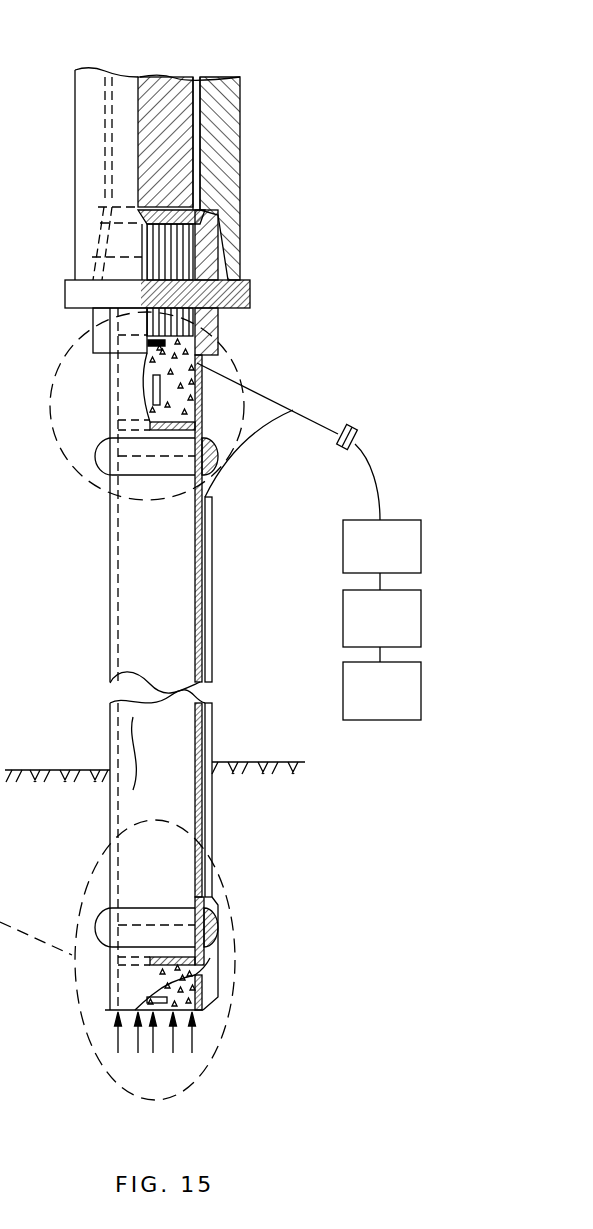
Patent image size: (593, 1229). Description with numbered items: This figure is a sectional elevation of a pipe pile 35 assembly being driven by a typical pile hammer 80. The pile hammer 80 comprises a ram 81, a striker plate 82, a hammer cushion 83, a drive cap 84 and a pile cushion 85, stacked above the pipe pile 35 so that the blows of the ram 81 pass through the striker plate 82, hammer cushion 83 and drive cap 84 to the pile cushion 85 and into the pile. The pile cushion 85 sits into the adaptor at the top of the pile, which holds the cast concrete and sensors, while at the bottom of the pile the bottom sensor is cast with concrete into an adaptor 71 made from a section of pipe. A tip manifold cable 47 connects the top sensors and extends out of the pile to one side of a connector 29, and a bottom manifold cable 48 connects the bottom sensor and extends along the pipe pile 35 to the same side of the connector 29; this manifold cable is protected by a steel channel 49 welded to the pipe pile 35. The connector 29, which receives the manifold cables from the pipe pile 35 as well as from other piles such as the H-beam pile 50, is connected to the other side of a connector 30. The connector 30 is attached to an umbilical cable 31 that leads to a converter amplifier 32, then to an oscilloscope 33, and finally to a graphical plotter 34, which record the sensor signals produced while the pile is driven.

The pile hammer 80 is at (240, 137).
The ram 81 is at (170, 77).
The striker plate 82 is at (208, 213).
The hammer cushion 83 is at (185, 260).
The drive cap 84 is at (244, 300).
The pile cushion 85 is at (202, 324).
The pipe pile 35 is at (130, 752).
The bottom manifold cable 48 is at (214, 475).
The steel channel 49 is at (212, 572).
The tip manifold cable 47 is at (271, 386).
The connector 29 is at (336, 442).
The connector 30 is at (356, 431).
The umbilical cable 31 is at (376, 483).
The converter amplifier 32 is at (421, 520).
The oscilloscope 33 is at (421, 590).
The graphical plotter 34 is at (421, 662).
The adaptor 71 is at (110, 1012).
The H-beam pile 50 is at (110, 386).